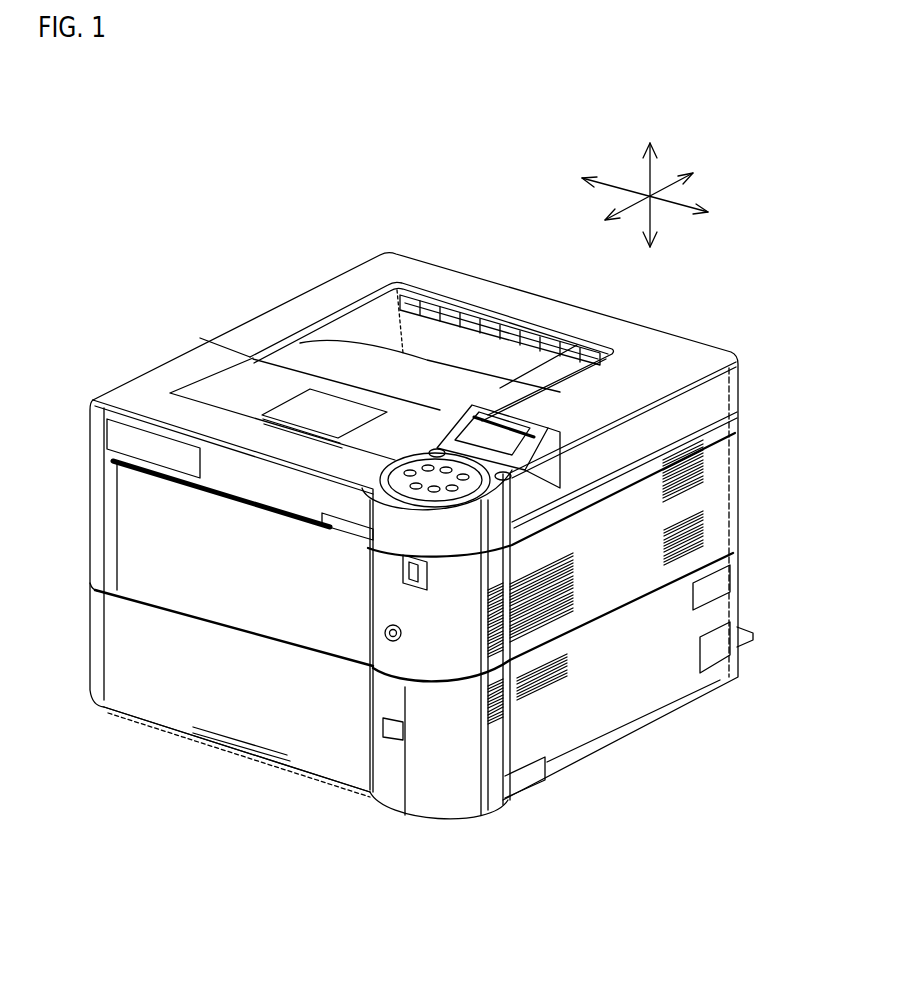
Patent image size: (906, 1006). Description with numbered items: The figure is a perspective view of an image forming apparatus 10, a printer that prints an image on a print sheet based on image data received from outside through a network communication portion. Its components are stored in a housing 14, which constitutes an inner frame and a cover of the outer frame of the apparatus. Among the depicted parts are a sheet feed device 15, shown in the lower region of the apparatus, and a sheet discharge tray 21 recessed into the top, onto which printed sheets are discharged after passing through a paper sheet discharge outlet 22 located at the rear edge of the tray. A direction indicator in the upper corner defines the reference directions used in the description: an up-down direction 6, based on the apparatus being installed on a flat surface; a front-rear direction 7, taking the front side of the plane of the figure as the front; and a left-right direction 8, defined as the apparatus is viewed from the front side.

The image forming apparatus 10 is at (230, 250).
The housing 14 is at (740, 437).
The sheet feed device 15 is at (322, 727).
The sheet discharge tray 21 is at (375, 328).
The paper sheet discharge outlet 22 is at (446, 304).
The up-down direction 6 is at (649, 176).
The front-rear direction 7 is at (667, 191).
The left-right direction 8 is at (604, 188).